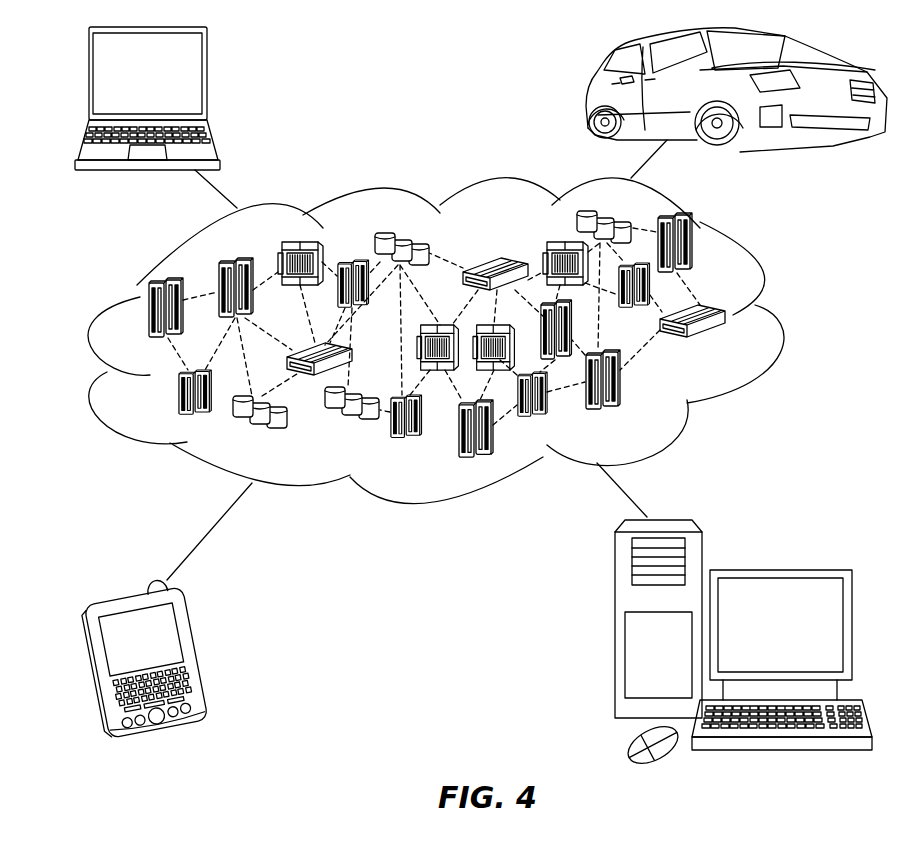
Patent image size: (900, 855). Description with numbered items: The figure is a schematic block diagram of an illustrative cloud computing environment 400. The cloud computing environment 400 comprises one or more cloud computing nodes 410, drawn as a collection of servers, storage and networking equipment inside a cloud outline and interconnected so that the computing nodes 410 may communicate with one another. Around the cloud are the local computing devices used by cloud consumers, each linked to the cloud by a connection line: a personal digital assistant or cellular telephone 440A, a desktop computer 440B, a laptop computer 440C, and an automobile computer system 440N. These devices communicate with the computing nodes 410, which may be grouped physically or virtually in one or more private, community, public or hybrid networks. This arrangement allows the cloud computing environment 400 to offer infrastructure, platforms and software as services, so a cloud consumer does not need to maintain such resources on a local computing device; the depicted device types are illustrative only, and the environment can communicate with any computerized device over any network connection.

The cloud computing environment 400 is at (778, 318).
The cloud computing nodes 410 is at (729, 343).
The personal digital assistant (PDA) or cellular telephone 440A is at (197, 652).
The desktop computer 440B is at (780, 570).
The laptop computer 440C is at (207, 80).
The automobile computer system 440N is at (591, 96).